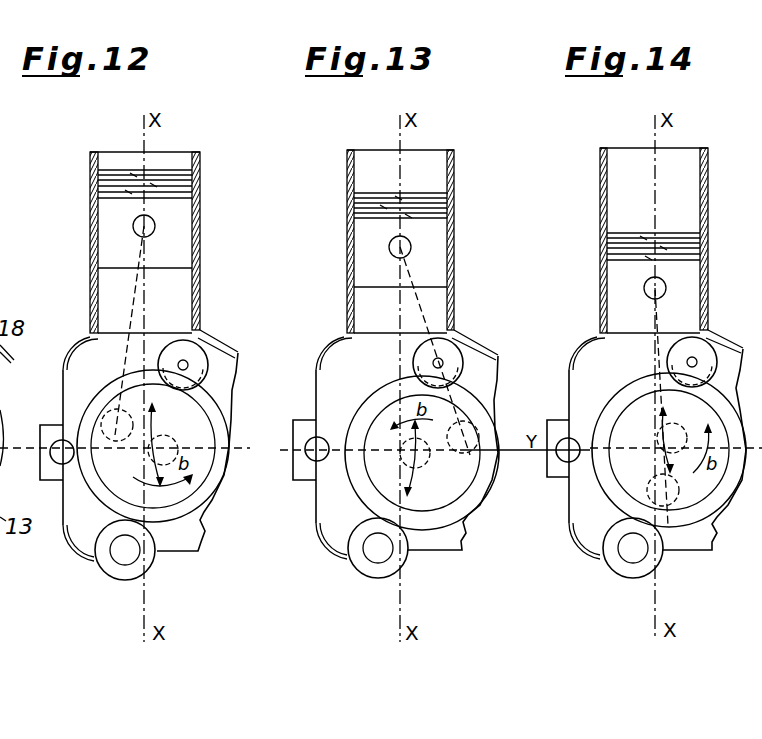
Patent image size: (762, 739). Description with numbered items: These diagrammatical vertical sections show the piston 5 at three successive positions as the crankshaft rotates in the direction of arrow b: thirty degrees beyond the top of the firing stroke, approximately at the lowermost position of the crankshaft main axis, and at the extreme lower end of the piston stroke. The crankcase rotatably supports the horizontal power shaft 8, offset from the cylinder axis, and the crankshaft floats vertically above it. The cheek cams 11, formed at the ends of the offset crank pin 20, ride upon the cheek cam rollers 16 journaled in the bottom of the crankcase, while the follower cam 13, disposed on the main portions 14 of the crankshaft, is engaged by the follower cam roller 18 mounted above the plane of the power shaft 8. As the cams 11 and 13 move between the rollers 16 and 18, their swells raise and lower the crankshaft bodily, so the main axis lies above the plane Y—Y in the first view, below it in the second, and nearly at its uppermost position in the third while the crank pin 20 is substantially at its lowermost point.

In FIG. 12, the piston 5 is at (113, 213).
In FIG. 13, the piston 5 is at (417, 250).
In FIG. 14, the piston 5 is at (620, 270).
In FIG. 12, the power shaft 8 is at (62, 453).
In FIG. 13, the power shaft 8 is at (314, 452).
In FIG. 14, the power shaft 8 is at (560, 455).
In FIG. 12, the crankshaft cheek cam 11 is at (113, 495).
In FIG. 13, the crankshaft cheek cam 11 is at (468, 503).
In FIG. 14, the crankshaft cheek cam 11 is at (623, 491).
In FIG. 12, the follower cam 13 is at (115, 470).
In FIG. 13, the follower cam 13 is at (450, 480).
In FIG. 14, the follower cam 13 is at (638, 462).
In FIG. 12, the main portions of the crankshaft 14 is at (173, 437).
In FIG. 13, the main portions of the crankshaft 14 is at (400, 453).
In FIG. 14, the main portions of the crankshaft 14 is at (660, 430).
In FIG. 12, the cheek cam roller 16 is at (118, 565).
In FIG. 13, the cheek cam roller 16 is at (393, 565).
In FIG. 14, the cheek cam roller 16 is at (622, 562).
In FIG. 12, the follower cam roller 18 is at (180, 363).
In FIG. 13, the follower cam roller 18 is at (450, 357).
In FIG. 14, the follower cam roller 18 is at (678, 353).
In FIG. 12, the crank pin 20 is at (100, 425).
In FIG. 13, the crank pin 20 is at (477, 430).
In FIG. 14, the crank pin 20 is at (673, 497).